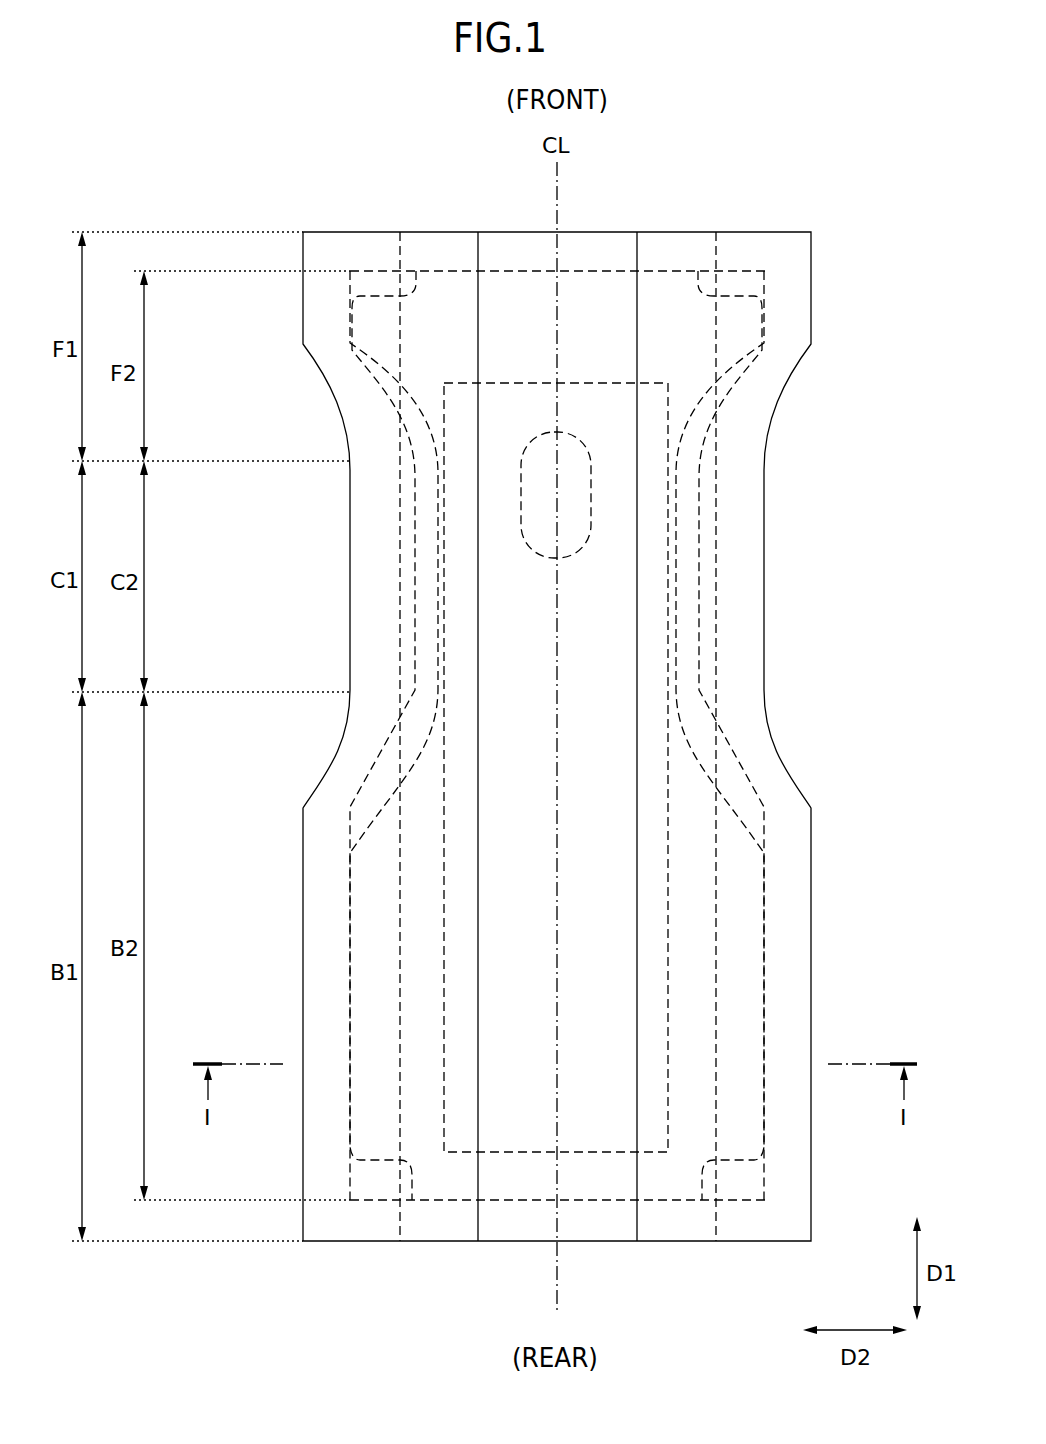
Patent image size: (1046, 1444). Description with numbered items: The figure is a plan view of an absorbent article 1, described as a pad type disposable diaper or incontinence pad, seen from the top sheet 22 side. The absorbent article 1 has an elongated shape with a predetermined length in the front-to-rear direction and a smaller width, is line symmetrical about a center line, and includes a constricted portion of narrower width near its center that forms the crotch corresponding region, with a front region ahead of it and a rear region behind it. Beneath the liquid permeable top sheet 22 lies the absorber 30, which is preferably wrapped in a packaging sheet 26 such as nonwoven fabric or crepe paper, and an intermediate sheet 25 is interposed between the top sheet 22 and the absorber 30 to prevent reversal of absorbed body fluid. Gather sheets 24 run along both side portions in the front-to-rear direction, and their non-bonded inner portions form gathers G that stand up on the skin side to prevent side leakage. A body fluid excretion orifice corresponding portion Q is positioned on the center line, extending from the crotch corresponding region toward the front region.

The absorbent article 1 is at (762, 146).
The top sheet 22 is at (600, 1177).
The gather sheet 24 is at (325, 940).
The intermediate sheet 25 is at (523, 1158).
The packaging sheet 26 is at (700, 599).
The absorber 30 is at (675, 538).
The body fluid excretion orifice corresponding portion Q is at (521, 488).
The gather G is at (428, 868).